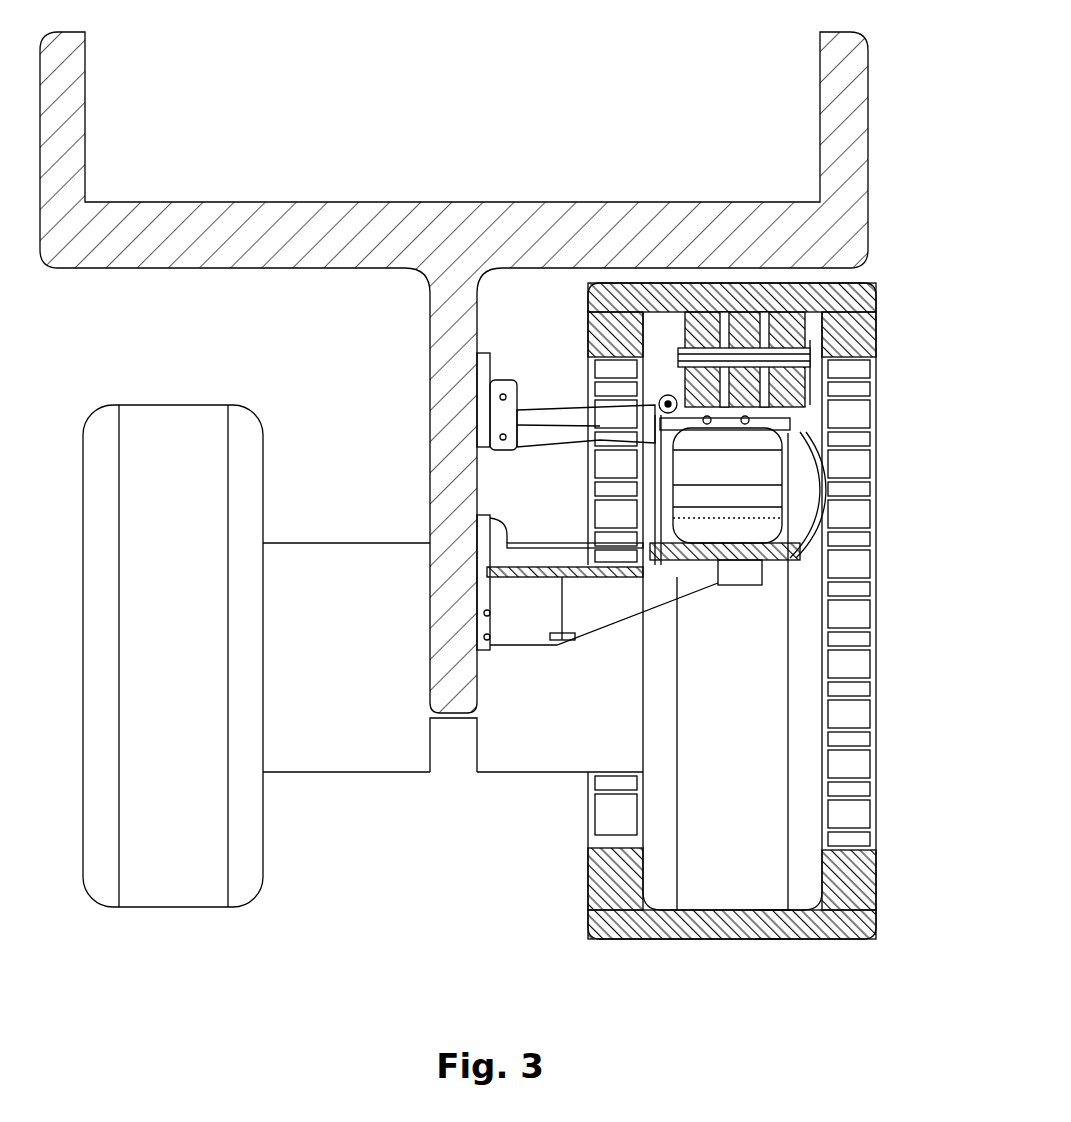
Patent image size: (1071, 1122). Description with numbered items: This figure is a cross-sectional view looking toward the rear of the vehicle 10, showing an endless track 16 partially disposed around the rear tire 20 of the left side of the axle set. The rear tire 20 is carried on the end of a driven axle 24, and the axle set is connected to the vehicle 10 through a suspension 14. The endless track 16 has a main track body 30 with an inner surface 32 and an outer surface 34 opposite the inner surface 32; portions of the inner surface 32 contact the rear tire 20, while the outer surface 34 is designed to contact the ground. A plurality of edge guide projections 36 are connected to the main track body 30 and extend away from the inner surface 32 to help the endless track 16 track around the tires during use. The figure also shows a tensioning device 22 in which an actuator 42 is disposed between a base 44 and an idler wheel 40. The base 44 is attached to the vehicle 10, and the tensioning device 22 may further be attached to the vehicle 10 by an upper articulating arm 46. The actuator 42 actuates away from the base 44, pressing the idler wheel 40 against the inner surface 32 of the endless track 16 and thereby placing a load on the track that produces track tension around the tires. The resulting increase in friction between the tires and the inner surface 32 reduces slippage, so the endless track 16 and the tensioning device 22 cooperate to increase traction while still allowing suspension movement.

The vehicle 10 is at (422, 200).
The suspension 14 is at (485, 755).
The endless track 16 is at (638, 930).
The rear tire 20 is at (730, 774).
The tensioning device 22 is at (763, 469).
The driven axle 24 is at (565, 722).
The main track body 30 is at (700, 930).
The inner surface 32 is at (771, 893).
The outer surface 34 is at (773, 942).
The edge guide projections 36 is at (865, 885).
The idler wheel 40 is at (793, 336).
The actuator 42 is at (730, 499).
The base 44 is at (605, 612).
The upper articulating arm 46 is at (578, 410).